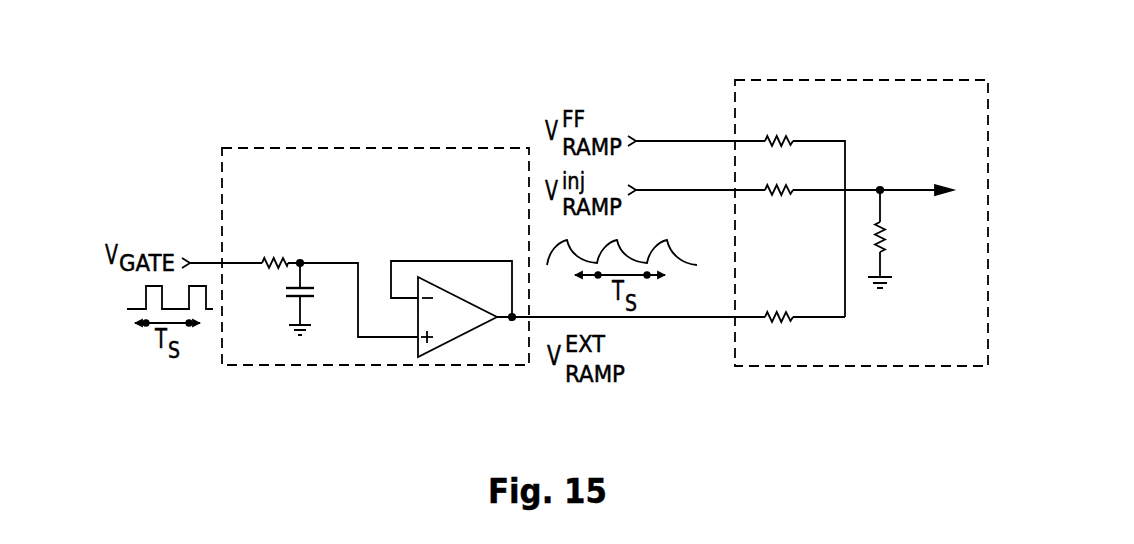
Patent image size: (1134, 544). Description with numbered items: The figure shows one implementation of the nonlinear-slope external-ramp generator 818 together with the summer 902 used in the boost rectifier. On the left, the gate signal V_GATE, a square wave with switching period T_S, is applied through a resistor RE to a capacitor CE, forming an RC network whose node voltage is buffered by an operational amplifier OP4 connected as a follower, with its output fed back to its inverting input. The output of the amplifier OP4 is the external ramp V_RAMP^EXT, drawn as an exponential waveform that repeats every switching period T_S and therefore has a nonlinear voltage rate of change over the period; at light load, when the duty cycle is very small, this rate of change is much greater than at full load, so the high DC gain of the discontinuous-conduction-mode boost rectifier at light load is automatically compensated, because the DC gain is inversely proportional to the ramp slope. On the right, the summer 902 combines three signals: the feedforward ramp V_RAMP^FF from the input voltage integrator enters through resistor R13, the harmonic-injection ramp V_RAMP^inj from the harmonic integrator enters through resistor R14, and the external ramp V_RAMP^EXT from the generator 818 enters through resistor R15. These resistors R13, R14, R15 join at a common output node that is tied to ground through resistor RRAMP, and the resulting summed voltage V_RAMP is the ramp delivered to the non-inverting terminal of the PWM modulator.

The nonlinear-slope external-ramp generator 818 is at (421, 148).
The summer 902 is at (862, 80).
The resistor RE is at (271, 244).
The capacitor CE is at (318, 299).
The operational amplifier OP4 is at (457, 317).
The resistor R13 is at (781, 120).
The resistor R14 is at (781, 171).
The resistor R15 is at (779, 337).
The resistor RRAMP is at (915, 239).